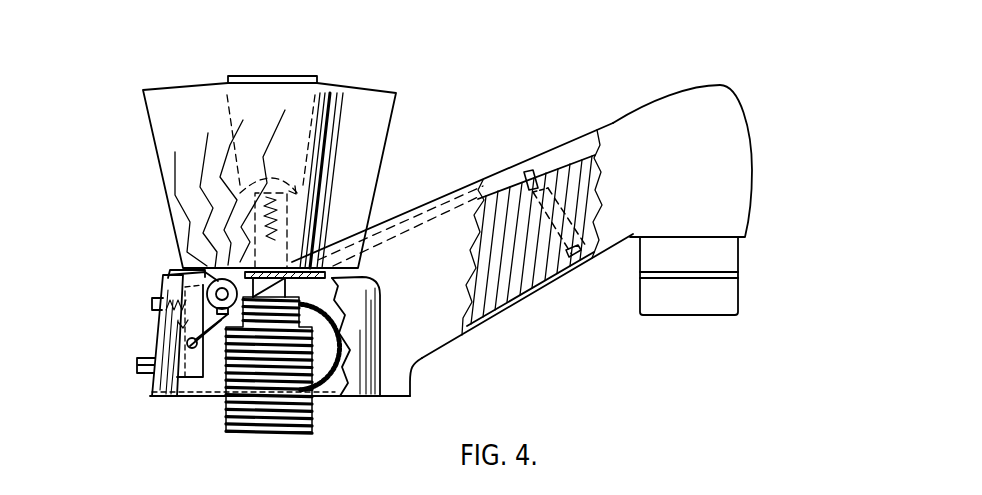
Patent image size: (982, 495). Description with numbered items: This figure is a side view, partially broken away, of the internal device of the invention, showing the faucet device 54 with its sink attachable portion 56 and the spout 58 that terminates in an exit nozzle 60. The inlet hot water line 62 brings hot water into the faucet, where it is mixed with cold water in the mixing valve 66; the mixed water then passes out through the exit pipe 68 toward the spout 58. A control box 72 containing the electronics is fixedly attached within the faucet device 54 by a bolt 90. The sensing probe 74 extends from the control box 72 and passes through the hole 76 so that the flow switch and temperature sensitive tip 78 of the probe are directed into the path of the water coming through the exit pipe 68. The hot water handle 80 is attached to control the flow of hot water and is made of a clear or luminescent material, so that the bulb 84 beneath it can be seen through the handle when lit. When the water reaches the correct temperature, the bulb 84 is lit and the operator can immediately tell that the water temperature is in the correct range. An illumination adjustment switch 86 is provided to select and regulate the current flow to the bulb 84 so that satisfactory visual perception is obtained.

The faucet device 54 is at (165, 400).
The sink attachable portion 56 is at (372, 392).
The spout 58 is at (738, 122).
The exit nozzle 60 is at (732, 297).
The inlet hot water line 62 is at (273, 420).
The mixing valve 66 is at (323, 396).
The exit pipe 68 is at (585, 177).
The control box 72 is at (152, 338).
The sensing probe 74 is at (526, 182).
The hole 76 is at (522, 192).
The flow switch and temperature sensitive tip 78 is at (560, 227).
The hot water handle 80 is at (387, 120).
The bulb 84 is at (213, 287).
The illumination adjustment switch 86 is at (137, 367).
The bolt 90 is at (153, 302).